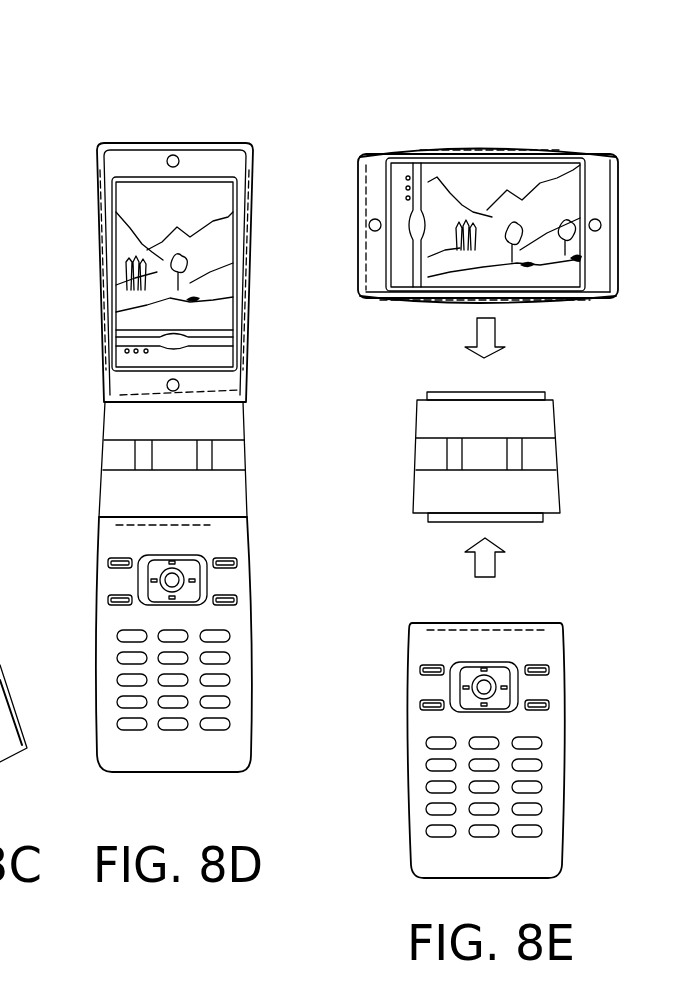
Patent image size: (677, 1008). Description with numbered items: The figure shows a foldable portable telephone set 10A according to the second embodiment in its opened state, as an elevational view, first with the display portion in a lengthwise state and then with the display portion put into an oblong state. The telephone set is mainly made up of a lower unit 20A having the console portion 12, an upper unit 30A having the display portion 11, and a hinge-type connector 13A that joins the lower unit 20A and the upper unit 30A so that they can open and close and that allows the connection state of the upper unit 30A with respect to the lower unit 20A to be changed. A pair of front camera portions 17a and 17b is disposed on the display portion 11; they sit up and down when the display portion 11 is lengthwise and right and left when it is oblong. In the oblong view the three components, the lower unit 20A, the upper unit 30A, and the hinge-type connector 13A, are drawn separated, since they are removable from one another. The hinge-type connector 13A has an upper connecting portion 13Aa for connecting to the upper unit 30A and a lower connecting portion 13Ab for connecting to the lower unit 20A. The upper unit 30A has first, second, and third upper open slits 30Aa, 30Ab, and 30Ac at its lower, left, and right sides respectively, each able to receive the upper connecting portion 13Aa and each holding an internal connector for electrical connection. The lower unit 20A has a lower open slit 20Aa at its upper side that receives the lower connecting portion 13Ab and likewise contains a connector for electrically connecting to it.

In FIG. 8D, the foldable portable telephone set 10A is at (72, 609).
In FIG. 8E, the foldable portable telephone set 10A is at (358, 680).
In FIG. 8D, the display portion 11 is at (125, 205).
In FIG. 8E, the display portion 11 is at (562, 278).
In FIG. 8D, the console portion 12 is at (102, 664).
In FIG. 8E, the console portion 12 is at (548, 790).
In FIG. 8D, the hinge-type connector 13A is at (104, 425).
In FIG. 8E, the hinge-type connector 13A is at (417, 475).
In FIG. 8E, the upper connecting portion 13Aa is at (517, 393).
In FIG. 8E, the lower connecting portion 13Ab is at (460, 523).
In FIG. 8D, the front camera portion 17a is at (180, 162).
In FIG. 8E, the front camera portion 17a is at (597, 218).
In FIG. 8D, the front camera portion 17b is at (166, 387).
In FIG. 8E, the front camera portion 17b is at (375, 217).
In FIG. 8E, the lower unit 20A is at (410, 810).
In FIG. 8D, the lower open slit 20Aa is at (210, 525).
In FIG. 8E, the lower open slit 20Aa is at (427, 630).
In FIG. 8D, the upper unit 30A is at (142, 143).
In FIG. 8E, the upper unit 30A is at (567, 152).
In FIG. 8D, the first upper open slit 30Aa is at (240, 390).
In FIG. 8E, the first upper open slit 30Aa is at (365, 306).
In FIG. 8D, the second upper open slit 30Ab is at (97, 287).
In FIG. 8E, the second upper open slit 30Ab is at (443, 307).
In FIG. 8D, the third upper open slit 30Ac is at (253, 240).
In FIG. 8E, the third upper open slit 30Ac is at (468, 148).